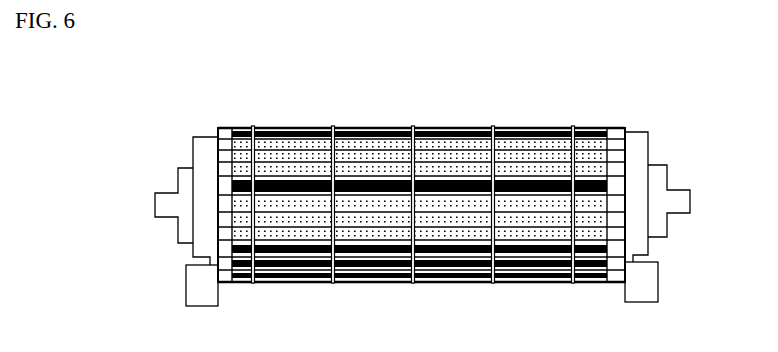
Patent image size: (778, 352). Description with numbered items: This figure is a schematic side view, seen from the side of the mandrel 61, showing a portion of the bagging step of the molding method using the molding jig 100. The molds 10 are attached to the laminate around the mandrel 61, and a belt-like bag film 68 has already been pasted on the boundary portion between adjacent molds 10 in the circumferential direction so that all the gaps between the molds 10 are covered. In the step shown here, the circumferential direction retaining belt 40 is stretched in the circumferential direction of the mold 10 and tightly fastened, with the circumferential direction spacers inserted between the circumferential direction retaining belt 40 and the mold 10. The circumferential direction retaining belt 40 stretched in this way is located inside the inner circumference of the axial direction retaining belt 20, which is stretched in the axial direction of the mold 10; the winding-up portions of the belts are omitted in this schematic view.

The molding jig 100 is at (437, 112).
The mold 10 is at (590, 150).
The axial direction retaining belt 20 is at (277, 140).
The circumferential direction retaining belt 40 is at (334, 136).
The mandrel 61 is at (220, 147).
The bag film 68 is at (522, 131).